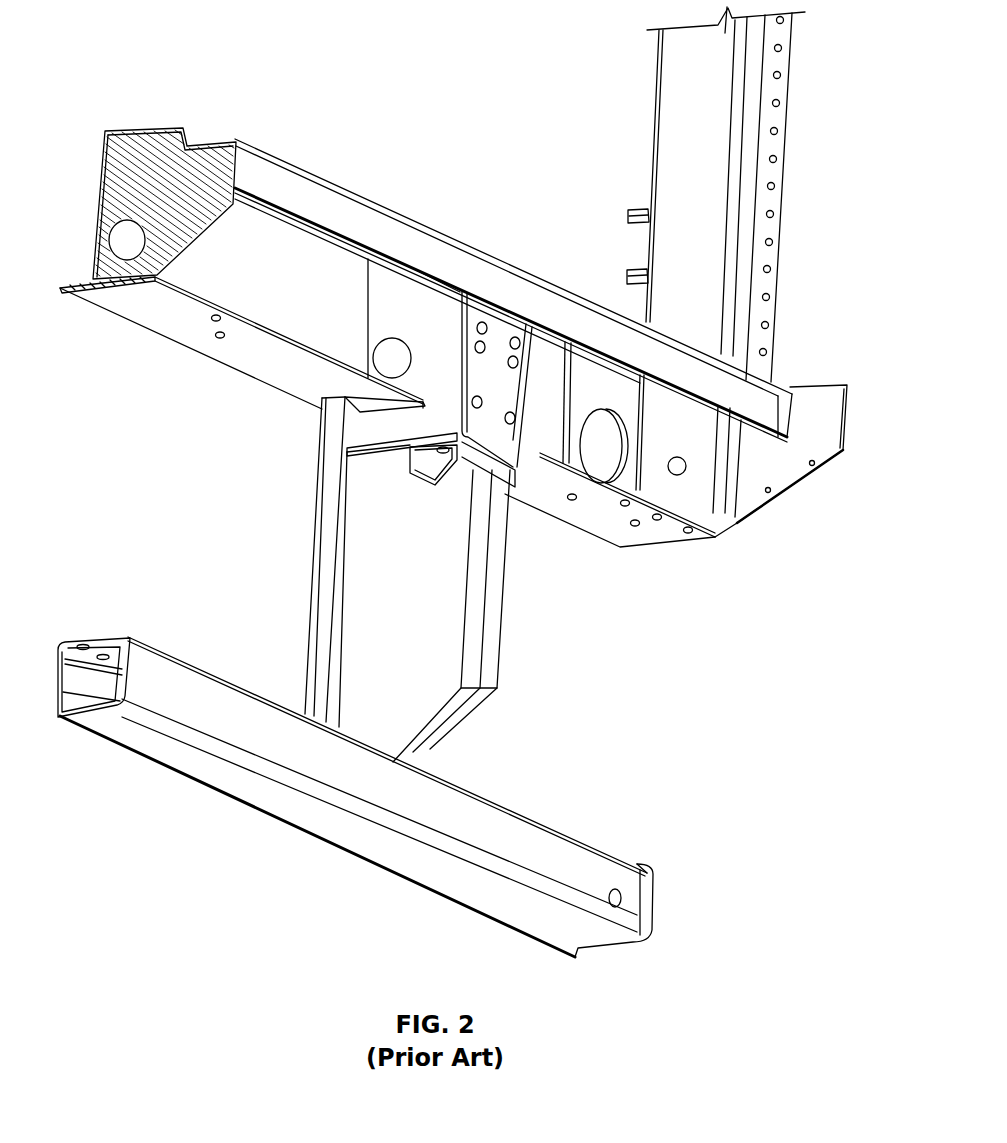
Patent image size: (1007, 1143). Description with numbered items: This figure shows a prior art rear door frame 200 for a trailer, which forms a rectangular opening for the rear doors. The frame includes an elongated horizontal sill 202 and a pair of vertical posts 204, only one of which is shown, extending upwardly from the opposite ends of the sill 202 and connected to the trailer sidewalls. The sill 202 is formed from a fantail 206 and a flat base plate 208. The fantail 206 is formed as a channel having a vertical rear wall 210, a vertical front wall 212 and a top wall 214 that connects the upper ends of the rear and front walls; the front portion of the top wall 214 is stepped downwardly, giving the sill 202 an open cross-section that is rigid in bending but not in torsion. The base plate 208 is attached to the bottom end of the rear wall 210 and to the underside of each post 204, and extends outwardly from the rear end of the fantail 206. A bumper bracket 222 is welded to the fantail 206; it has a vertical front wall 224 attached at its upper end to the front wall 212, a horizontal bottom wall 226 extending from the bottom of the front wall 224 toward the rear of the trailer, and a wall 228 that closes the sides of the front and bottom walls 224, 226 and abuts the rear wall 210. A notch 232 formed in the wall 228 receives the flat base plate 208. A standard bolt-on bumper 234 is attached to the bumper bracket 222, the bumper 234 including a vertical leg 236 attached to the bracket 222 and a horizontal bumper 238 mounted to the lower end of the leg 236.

The rear door frame 200 is at (505, 149).
The sill 202 is at (118, 170).
The vertical post 204 is at (712, 179).
The fantail 206 is at (323, 171).
The base plate 208 is at (190, 330).
The rear wall 210 is at (98, 215).
The front wall 212 is at (407, 238).
The top wall 214 is at (147, 122).
The bumper bracket 222 is at (393, 287).
The front wall 224 is at (502, 327).
The bottom wall 226 is at (345, 458).
The wall 228 is at (438, 297).
The notch 232 is at (415, 407).
The bolt-on bumper 234 is at (362, 835).
The vertical leg 236 is at (308, 626).
The horizontal bumper 238 is at (533, 838).